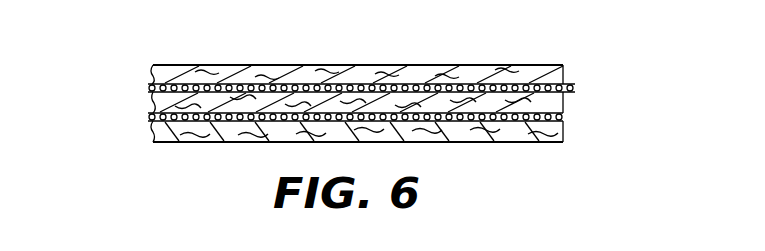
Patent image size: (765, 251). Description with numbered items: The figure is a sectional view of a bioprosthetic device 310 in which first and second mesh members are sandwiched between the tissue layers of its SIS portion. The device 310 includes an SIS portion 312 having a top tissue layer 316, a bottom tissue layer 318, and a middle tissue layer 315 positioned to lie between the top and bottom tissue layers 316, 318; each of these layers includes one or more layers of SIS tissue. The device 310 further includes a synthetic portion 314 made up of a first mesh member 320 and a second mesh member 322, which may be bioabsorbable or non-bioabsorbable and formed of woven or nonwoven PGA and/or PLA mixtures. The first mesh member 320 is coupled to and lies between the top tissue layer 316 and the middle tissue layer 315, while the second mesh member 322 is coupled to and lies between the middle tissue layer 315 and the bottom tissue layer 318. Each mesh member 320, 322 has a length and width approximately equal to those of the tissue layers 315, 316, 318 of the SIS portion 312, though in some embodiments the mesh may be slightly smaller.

The bioprosthetic device 310 is at (535, 51).
The SIS portion 312 is at (136, 63).
The synthetic portion 314 is at (586, 84).
The middle tissue layer 315 is at (550, 99).
The top tissue layer 316 is at (542, 65).
The bottom tissue layer 318 is at (523, 135).
The first mesh member 320 is at (150, 88).
The second mesh member 322 is at (151, 118).